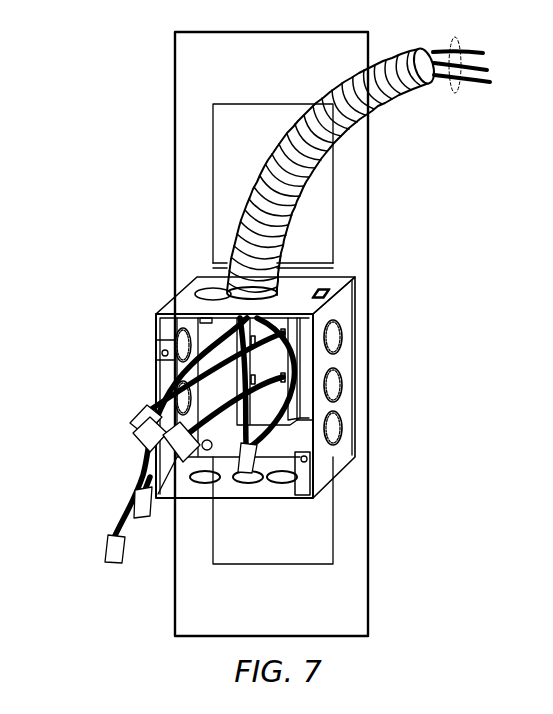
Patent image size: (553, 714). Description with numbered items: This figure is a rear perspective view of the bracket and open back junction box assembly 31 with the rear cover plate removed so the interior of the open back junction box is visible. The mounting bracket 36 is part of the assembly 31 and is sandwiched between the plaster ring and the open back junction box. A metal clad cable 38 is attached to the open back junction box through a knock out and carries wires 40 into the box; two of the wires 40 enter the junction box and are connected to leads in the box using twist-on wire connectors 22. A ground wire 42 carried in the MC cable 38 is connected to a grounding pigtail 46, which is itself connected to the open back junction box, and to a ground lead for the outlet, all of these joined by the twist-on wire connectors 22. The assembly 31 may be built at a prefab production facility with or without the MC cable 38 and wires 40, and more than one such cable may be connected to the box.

The twist-on wire connectors 22 is at (145, 405).
The bracket and open back junction box assembly 31 is at (108, 99).
The mounting bracket 36 is at (253, 611).
The metal clad (MC) cable 38 is at (352, 120).
The wires 40 is at (452, 95).
The ground wire 42 is at (300, 372).
The grounding pigtail 46 is at (303, 353).